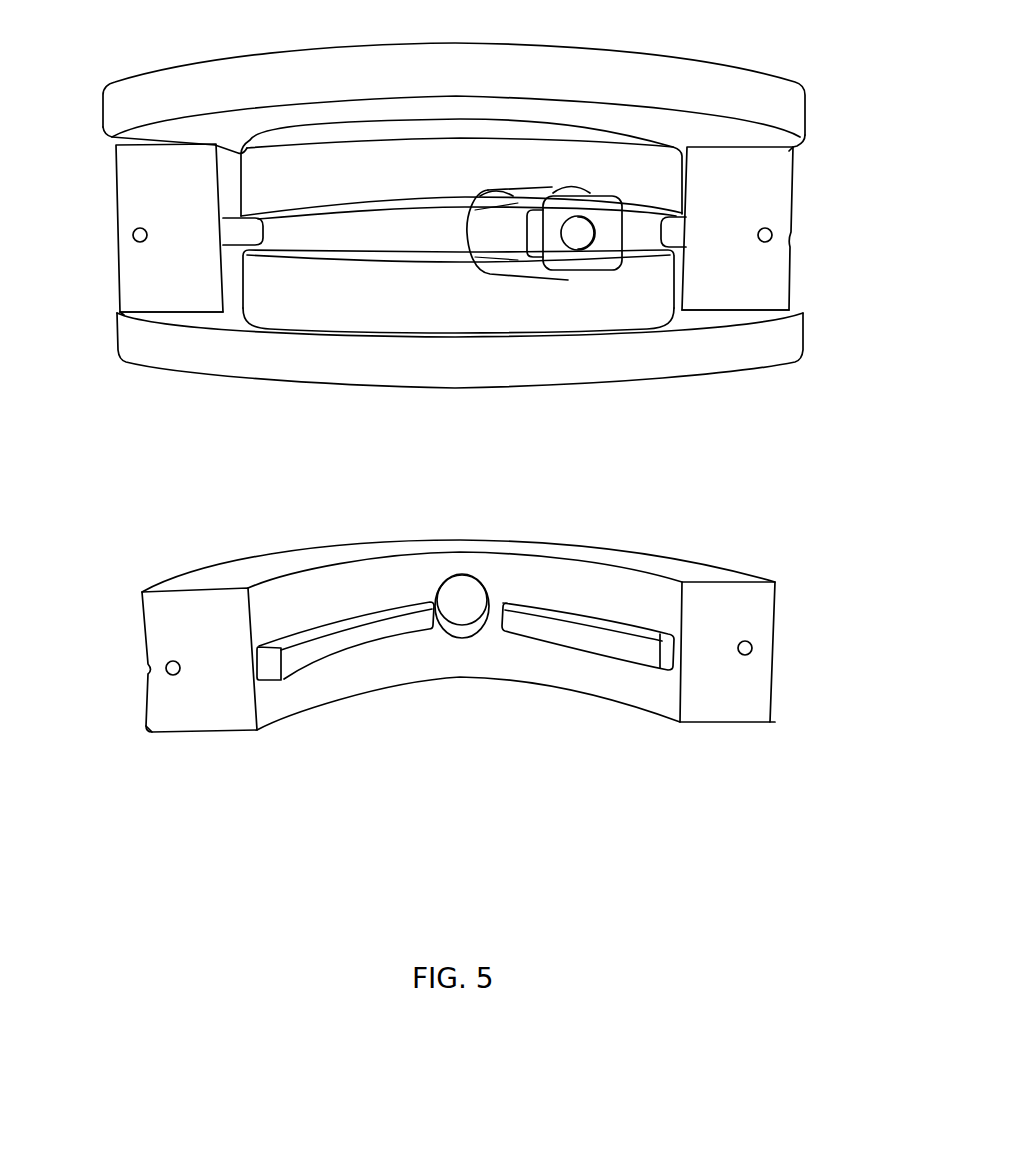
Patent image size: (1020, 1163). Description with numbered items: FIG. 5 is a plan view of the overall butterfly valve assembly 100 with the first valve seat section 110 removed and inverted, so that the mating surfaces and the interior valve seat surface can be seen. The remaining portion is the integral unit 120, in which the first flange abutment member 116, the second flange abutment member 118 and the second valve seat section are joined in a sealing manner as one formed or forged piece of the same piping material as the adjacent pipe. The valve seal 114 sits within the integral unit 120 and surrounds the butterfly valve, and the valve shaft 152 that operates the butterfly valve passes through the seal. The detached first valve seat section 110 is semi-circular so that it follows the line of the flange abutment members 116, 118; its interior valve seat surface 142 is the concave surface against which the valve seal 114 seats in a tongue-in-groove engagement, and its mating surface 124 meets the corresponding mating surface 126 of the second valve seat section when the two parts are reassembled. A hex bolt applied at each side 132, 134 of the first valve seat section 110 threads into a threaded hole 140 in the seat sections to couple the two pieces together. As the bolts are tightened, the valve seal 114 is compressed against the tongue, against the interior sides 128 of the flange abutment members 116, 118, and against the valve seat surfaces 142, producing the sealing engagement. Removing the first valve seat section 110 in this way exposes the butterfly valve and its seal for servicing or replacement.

The clamp assembly 100 is at (692, 487).
The first valve seat section 110 is at (458, 643).
The valve seal 114 is at (540, 308).
The first flange abutment member 116 is at (752, 347).
The second flange abutment member 118 is at (725, 90).
The integral unit 120 is at (97, 320).
The mating surface 124 is at (226, 708).
The mating surface 126 is at (181, 191).
The interior sides 128 is at (748, 130).
The side 132 is at (783, 680).
The side 134 is at (137, 702).
The threaded hole 140 is at (137, 228).
The valve seat surface 142 is at (351, 601).
The valve shaft 152 is at (613, 216).